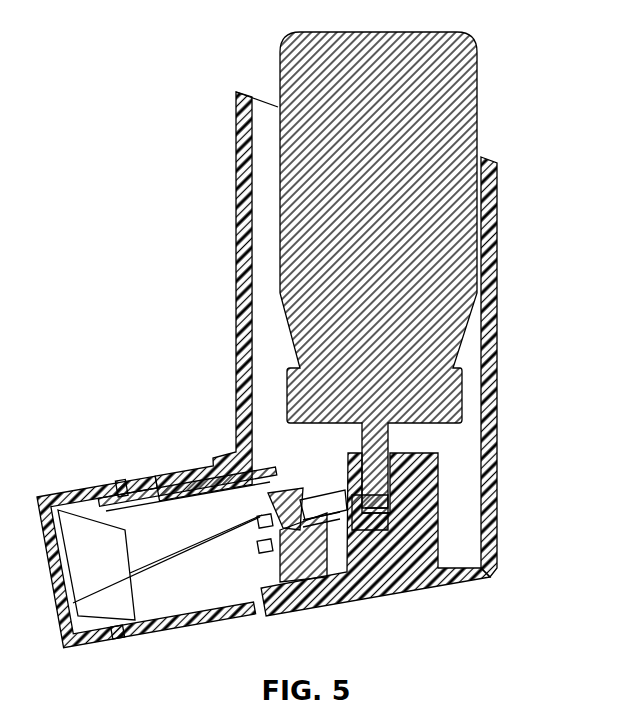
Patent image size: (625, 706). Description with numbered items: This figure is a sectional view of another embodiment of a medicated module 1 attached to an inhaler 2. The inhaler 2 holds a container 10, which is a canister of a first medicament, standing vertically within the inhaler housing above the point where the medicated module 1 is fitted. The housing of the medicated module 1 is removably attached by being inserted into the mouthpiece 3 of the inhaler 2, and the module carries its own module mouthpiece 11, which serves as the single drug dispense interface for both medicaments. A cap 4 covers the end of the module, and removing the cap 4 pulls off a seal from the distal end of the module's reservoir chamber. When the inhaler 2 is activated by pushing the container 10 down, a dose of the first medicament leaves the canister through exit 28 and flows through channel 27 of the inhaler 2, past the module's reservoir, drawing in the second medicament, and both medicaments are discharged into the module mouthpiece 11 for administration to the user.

The medicated module 1 is at (200, 603).
The inhaler 2 is at (497, 270).
The mouthpiece of the inhaler 3 is at (130, 494).
The cap 4 is at (83, 492).
The container 10 is at (364, 222).
The module mouthpiece 11 is at (106, 617).
The channel 27 is at (387, 517).
The exit 28 is at (390, 492).